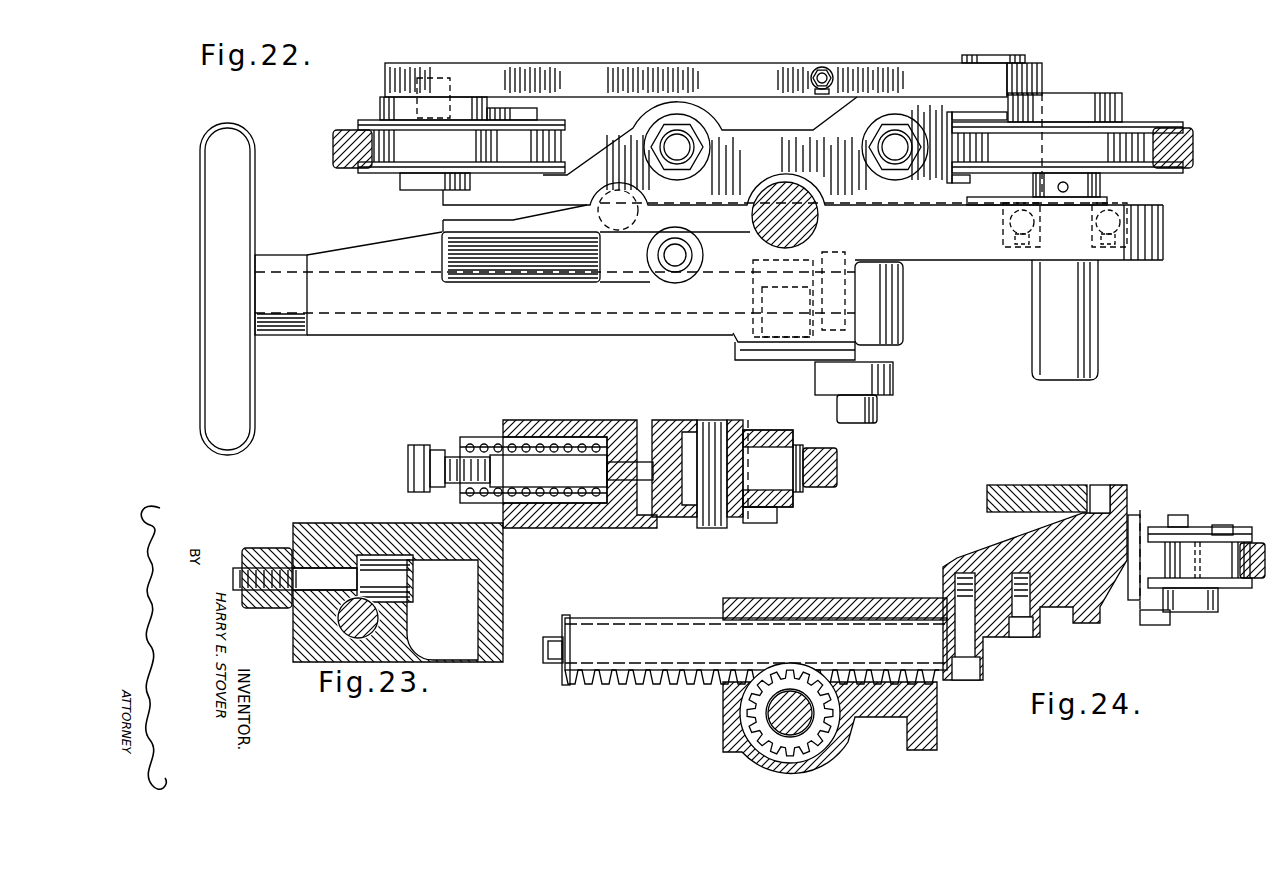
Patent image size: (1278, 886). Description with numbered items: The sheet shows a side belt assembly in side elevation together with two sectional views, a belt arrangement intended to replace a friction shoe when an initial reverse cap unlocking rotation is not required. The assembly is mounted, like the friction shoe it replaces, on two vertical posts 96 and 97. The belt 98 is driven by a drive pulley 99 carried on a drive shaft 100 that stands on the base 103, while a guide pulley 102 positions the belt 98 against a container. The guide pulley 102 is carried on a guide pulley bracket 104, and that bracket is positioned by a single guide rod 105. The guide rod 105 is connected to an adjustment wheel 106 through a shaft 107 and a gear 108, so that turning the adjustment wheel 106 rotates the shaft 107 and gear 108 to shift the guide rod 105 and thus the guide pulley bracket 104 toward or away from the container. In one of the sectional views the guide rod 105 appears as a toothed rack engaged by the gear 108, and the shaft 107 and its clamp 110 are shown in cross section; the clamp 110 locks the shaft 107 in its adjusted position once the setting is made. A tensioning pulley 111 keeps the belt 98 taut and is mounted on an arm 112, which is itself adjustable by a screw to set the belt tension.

In FIG. 22, the vertical post 96 is at (893, 369).
In FIG. 22, the vertical post 97 is at (878, 408).
In FIG. 22, the belt 98 is at (333, 150).
In FIG. 23, the belt 98 is at (838, 470).
In FIG. 24, the belt 98 is at (1258, 543).
In FIG. 22, the drive pulley 99 is at (1146, 122).
In FIG. 22, the drive shaft 100 is at (1100, 334).
In FIG. 23, the guide pulley 102 is at (764, 452).
In FIG. 24, the guide pulley 102 is at (1197, 546).
In FIG. 22, the base 103 is at (1166, 212).
In FIG. 22, the guide pulley bracket 104 is at (963, 252).
In FIG. 23, the guide pulley bracket 104 is at (611, 420).
In FIG. 24, the guide pulley bracket 104 is at (803, 600).
In FIG. 22, the guide rod 105 is at (776, 190).
In FIG. 24, the guide rod 105 is at (660, 622).
In FIG. 22, the adjustment wheel 106 is at (210, 243).
In FIG. 22, the shaft 107 is at (556, 312).
In FIG. 23, the shaft 107 is at (340, 620).
In FIG. 22, the gear 108 is at (735, 350).
In FIG. 24, the gear 108 is at (820, 730).
In FIG. 23, the clamp 110 is at (263, 548).
In FIG. 22, the tensioning pulley 111 is at (397, 158).
In FIG. 22, the arm 112 is at (673, 80).
In FIG. 24, the arm 112 is at (1050, 488).